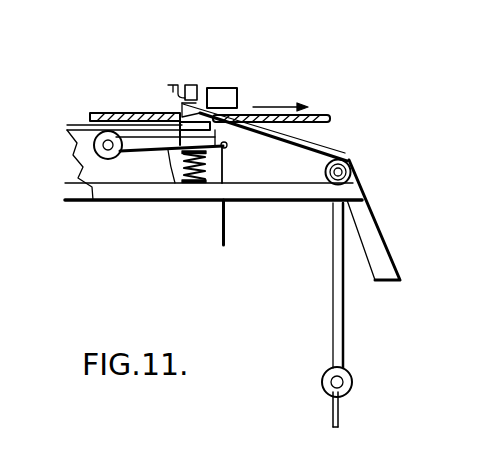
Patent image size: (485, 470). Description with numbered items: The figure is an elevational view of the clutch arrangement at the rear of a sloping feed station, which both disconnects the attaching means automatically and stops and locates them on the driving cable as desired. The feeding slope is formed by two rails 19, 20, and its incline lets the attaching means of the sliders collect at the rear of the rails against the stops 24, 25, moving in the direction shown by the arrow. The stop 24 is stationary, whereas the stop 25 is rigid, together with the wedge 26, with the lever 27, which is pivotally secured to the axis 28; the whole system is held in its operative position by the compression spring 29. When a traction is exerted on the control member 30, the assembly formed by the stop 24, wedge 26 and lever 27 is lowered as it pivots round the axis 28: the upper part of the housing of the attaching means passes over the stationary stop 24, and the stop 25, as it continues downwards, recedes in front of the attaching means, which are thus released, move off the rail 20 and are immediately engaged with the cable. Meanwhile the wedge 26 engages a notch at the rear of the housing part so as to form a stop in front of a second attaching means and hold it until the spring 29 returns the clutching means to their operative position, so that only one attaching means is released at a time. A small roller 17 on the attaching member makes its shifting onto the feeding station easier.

The small roller 17 is at (350, 163).
The rail 19 is at (90, 184).
The rail 20 is at (202, 192).
The stationary stop 24 is at (212, 127).
The stop 25 is at (232, 93).
The wedge 26 is at (172, 89).
The lever 27 is at (147, 145).
The axis 28 is at (107, 143).
The compression spring 29 is at (207, 172).
The control member 30 is at (226, 219).